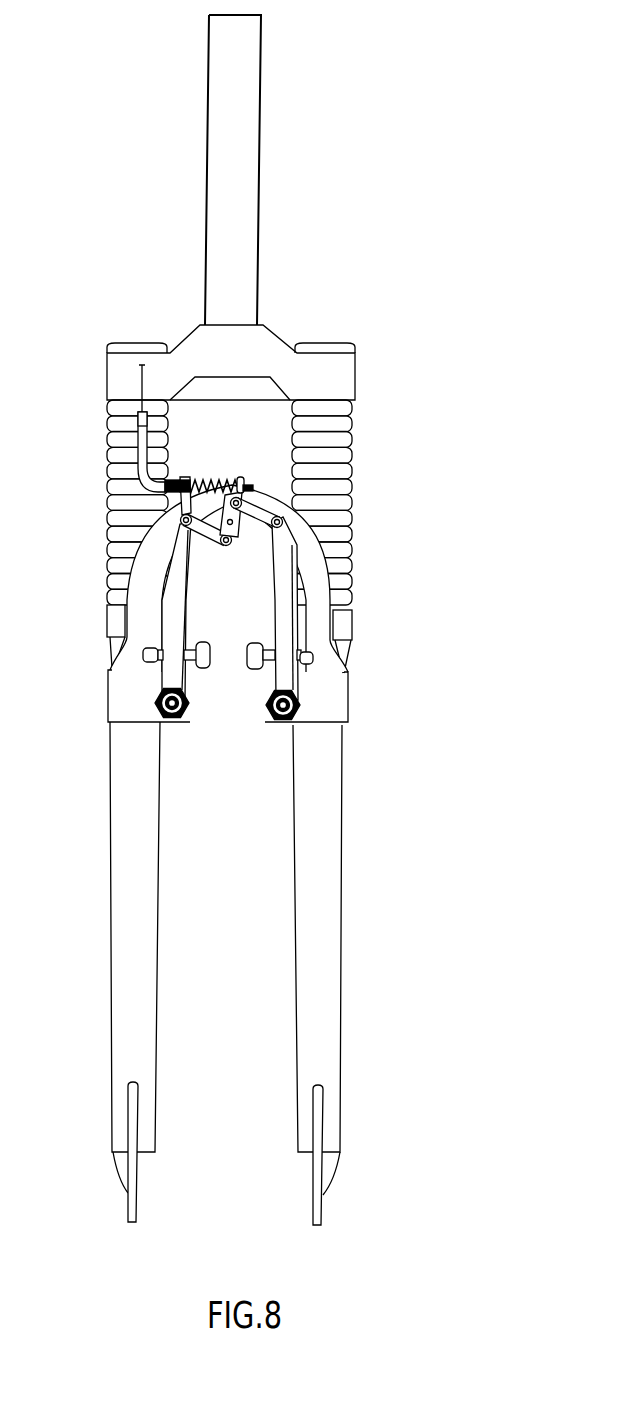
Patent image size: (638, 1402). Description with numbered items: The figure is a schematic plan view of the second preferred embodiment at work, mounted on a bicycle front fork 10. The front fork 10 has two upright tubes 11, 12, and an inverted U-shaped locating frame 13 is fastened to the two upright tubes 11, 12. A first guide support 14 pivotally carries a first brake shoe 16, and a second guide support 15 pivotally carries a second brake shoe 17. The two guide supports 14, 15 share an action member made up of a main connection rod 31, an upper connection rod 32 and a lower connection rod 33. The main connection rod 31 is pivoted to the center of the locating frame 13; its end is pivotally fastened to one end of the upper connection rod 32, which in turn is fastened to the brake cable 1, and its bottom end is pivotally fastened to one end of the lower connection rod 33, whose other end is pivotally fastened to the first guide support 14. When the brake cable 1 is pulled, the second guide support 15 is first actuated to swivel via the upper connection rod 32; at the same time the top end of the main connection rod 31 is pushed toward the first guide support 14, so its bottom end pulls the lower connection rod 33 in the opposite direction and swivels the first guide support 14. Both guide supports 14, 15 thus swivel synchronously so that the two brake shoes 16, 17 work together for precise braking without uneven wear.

The brake cable 1 is at (140, 382).
The bicycle front fork 10 is at (385, 258).
The upright tube 11 is at (112, 1062).
The upright tube 12 is at (340, 1057).
The locating frame 13 is at (122, 702).
The first guide support 14 is at (172, 613).
The second guide support 15 is at (283, 672).
The first brake shoe 16 is at (202, 660).
The second brake shoe 17 is at (254, 663).
The main connection rod 31 is at (246, 533).
The upper connection rod 32 is at (250, 487).
The lower connection rod 33 is at (208, 532).